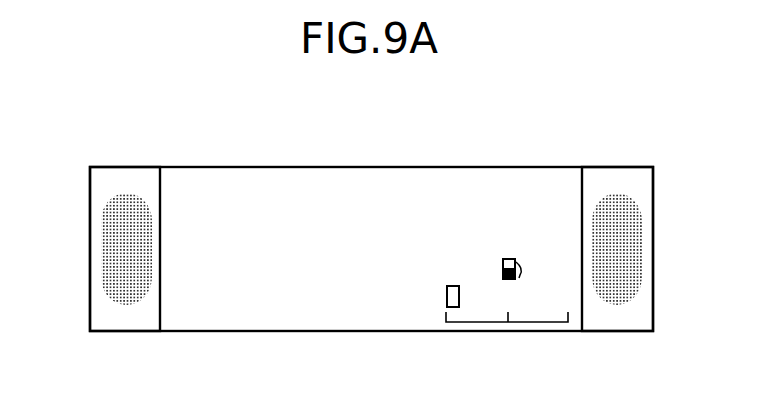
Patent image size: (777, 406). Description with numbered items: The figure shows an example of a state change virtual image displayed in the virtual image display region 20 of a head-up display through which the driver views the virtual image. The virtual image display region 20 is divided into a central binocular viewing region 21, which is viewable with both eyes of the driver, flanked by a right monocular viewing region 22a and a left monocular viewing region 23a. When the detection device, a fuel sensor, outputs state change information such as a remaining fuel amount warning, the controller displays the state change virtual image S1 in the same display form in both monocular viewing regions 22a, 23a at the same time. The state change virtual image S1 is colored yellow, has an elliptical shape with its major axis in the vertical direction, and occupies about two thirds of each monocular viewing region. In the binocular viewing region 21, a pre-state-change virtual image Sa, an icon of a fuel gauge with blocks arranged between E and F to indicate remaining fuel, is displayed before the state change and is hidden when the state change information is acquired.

The virtual image display region 20 is at (459, 157).
The binocular viewing region 21 is at (544, 175).
The right monocular viewing region 22a is at (138, 177).
The left monocular viewing region 23a is at (614, 177).
The state change virtual image S1 is at (103, 245).
The pre-state-change virtual image Sa is at (528, 332).